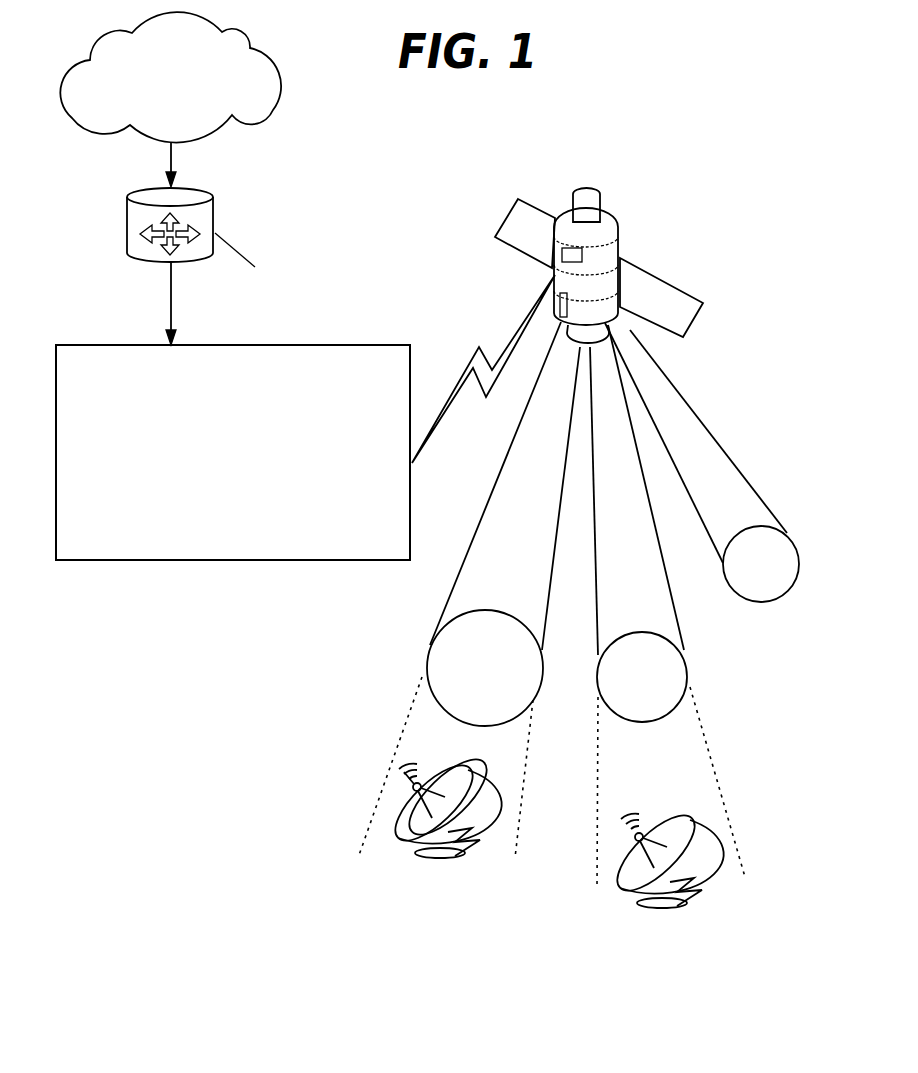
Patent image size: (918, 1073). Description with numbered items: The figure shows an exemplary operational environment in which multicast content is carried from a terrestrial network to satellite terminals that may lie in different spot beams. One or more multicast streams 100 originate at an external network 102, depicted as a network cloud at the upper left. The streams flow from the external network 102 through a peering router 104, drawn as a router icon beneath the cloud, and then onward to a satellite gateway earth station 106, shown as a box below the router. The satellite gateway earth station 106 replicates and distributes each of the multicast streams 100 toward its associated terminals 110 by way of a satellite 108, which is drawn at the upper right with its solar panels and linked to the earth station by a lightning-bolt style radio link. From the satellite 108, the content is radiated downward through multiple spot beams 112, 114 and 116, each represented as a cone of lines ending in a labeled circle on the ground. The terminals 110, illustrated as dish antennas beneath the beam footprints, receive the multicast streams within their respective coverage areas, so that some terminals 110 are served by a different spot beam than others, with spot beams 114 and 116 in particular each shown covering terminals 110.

The multicast streams 100 is at (167, 152).
The external network 102 is at (170, 77).
The peering router 104 is at (215, 215).
The satellite gateway earth station 106 is at (305, 417).
The satellite 108 is at (620, 240).
The terminals 110 is at (437, 857).
The spot beam 112 is at (760, 603).
The spot beam 114 is at (642, 727).
The spot beam 116 is at (532, 707).